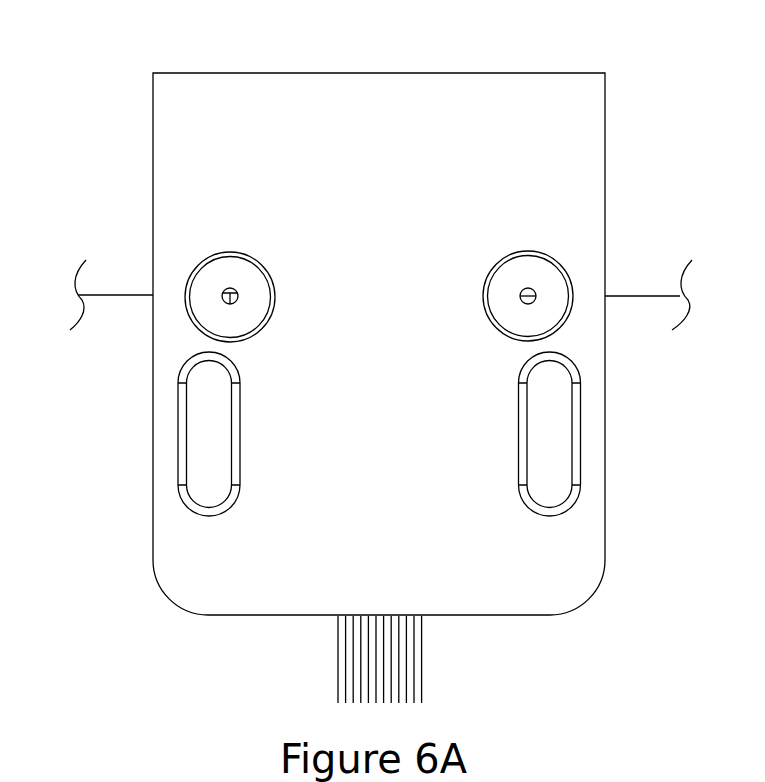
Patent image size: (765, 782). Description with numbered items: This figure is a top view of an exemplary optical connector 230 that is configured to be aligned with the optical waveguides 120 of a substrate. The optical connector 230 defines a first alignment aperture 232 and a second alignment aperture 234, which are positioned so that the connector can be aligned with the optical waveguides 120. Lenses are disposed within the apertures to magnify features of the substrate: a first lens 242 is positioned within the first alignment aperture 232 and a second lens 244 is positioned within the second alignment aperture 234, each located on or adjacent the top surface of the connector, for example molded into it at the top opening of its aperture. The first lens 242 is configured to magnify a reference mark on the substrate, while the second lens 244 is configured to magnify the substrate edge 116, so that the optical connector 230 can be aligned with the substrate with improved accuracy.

The optical connector 230 is at (346, 124).
The first alignment aperture 232 is at (203, 285).
The second alignment aperture 234 is at (553, 285).
The first lens 242 is at (245, 277).
The second lens 244 is at (507, 277).
The substrate edge 116 is at (122, 297).
The optical waveguides 120 is at (340, 645).